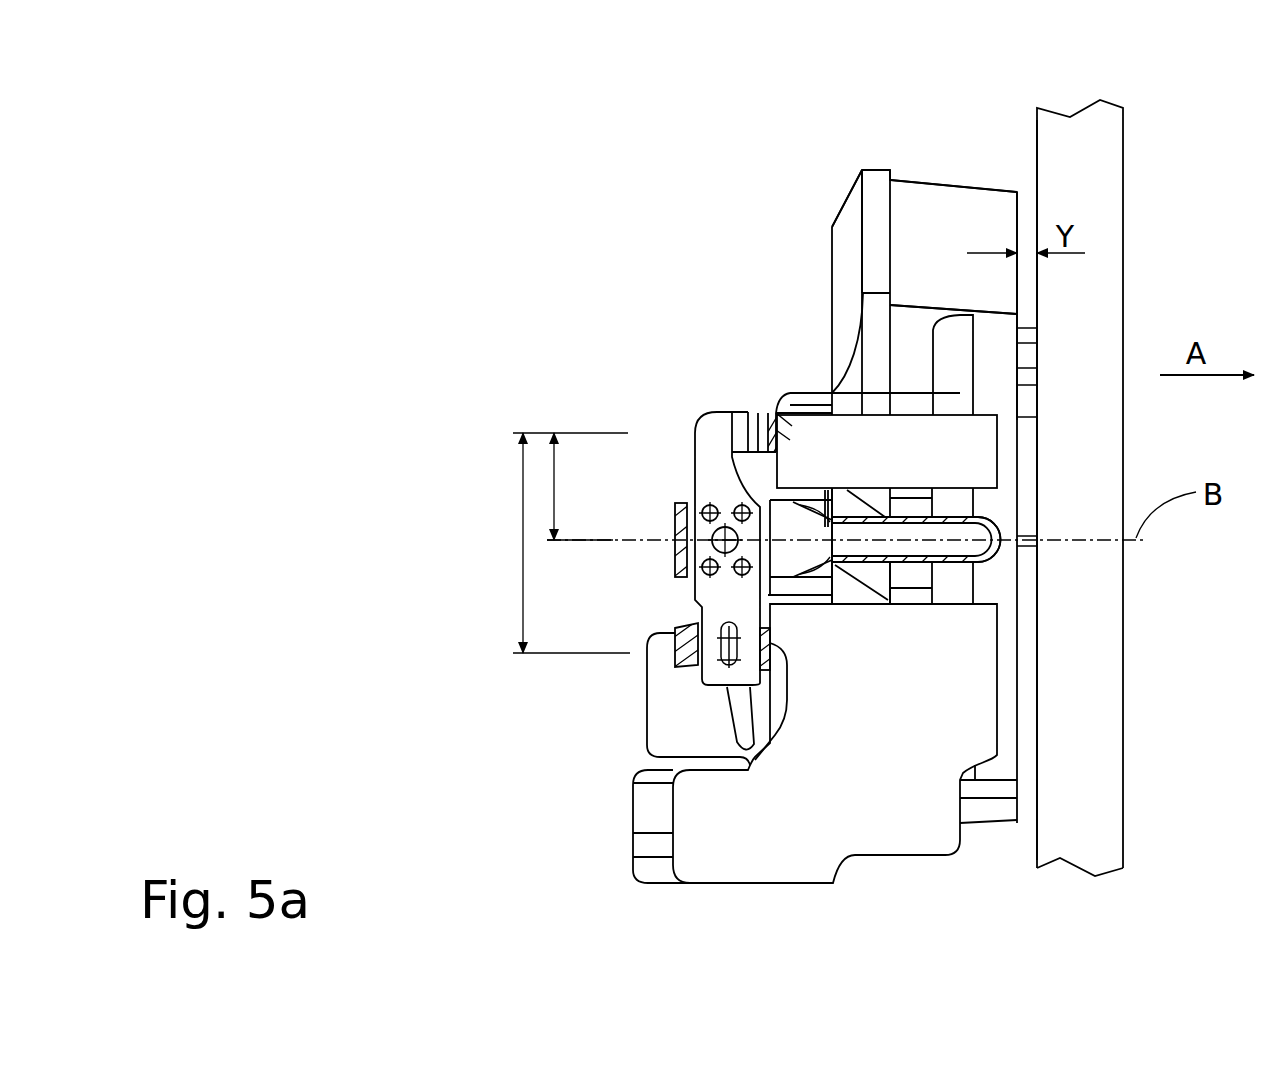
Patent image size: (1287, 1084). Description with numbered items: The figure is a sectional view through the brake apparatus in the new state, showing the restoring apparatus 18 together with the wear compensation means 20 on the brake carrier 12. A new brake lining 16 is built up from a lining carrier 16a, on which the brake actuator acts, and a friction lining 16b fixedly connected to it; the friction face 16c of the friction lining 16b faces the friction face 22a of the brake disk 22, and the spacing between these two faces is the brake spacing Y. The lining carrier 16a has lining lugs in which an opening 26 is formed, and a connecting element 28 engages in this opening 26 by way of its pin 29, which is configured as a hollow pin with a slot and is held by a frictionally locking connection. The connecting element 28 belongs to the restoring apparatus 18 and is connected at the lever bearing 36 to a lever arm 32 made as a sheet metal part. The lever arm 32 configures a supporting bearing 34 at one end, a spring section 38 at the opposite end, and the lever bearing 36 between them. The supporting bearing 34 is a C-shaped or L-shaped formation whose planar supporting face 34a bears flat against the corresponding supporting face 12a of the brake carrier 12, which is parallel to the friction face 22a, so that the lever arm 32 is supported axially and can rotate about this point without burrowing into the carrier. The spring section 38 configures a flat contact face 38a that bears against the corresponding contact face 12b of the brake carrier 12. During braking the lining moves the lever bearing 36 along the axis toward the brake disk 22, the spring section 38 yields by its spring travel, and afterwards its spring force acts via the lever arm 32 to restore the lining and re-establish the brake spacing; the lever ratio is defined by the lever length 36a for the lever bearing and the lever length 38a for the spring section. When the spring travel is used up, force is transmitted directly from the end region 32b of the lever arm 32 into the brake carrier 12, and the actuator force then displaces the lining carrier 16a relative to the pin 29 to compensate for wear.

The brake carrier 12 is at (835, 803).
The supporting face 12a is at (773, 442).
The contact face 12b is at (735, 683).
The brake lining 16 is at (875, 157).
The lining carrier 16a is at (842, 250).
The friction lining 16b is at (928, 203).
The friction face 16c is at (1018, 228).
The restoring apparatus 18 is at (685, 453).
The wear compensation means 20 is at (905, 572).
The brake disk 22 is at (1098, 150).
The friction face 22a is at (1037, 128).
The opening 26 is at (856, 566).
The connecting element 28 is at (790, 583).
The pin 29 is at (960, 563).
The lever arm 32 is at (703, 442).
The end region 32b is at (745, 695).
The supporting bearing 34 is at (768, 420).
The supporting face 34a is at (783, 410).
The lever bearing 36 is at (712, 535).
The lever length 36a is at (554, 500).
The spring section 38 is at (672, 660).
The contact face 38a is at (520, 540).